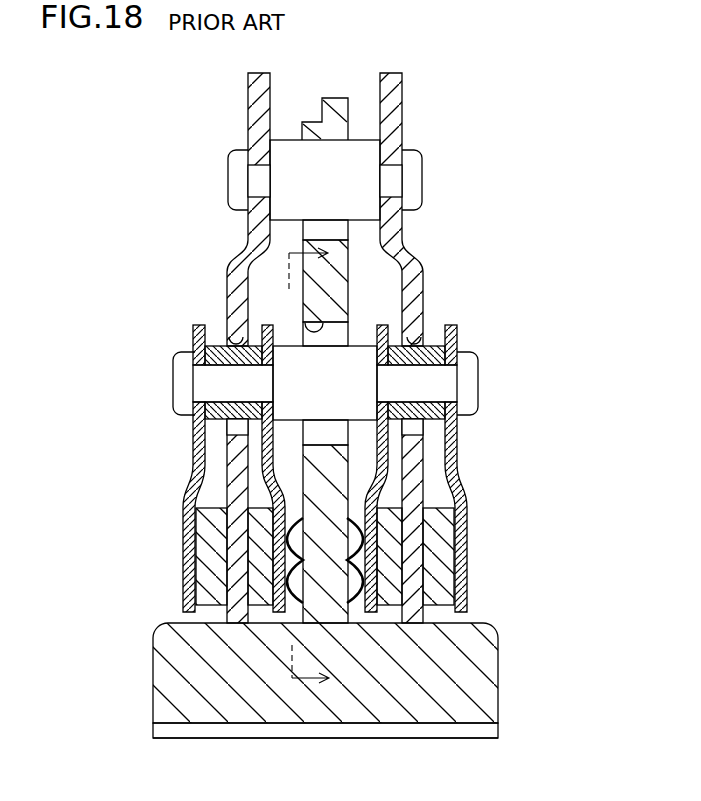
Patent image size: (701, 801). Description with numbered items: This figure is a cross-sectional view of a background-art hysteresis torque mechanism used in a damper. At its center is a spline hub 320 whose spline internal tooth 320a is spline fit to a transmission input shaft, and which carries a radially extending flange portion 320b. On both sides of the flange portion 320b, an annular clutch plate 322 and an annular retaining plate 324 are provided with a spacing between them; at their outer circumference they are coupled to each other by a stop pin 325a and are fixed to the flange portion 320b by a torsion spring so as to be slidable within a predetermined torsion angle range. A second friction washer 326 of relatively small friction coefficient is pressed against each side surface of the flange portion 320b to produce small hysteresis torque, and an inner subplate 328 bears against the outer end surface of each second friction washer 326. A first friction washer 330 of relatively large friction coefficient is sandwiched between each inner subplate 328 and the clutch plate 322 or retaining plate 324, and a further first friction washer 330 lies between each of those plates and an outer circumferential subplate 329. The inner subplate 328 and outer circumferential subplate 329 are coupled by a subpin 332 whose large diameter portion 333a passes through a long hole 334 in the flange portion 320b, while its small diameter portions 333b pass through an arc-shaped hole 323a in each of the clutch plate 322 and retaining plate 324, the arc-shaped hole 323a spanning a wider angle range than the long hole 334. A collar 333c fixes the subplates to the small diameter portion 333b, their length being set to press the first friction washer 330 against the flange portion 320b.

The spline hub 320 is at (477, 679).
The spline internal tooth 320a is at (473, 738).
The flange portion 320b is at (327, 292).
The clutch plate 322 is at (248, 97).
The retaining plate 324 is at (402, 104).
The stop pin 325a is at (352, 165).
The second friction washer 326 is at (283, 558).
The inner subplate 328 is at (283, 500).
The outer circumferential subplate 329 is at (200, 453).
The first friction washer 330 is at (212, 583).
The subpin 332 is at (491, 369).
The large diameter portion 333a is at (348, 358).
The small diameter portion 333b is at (212, 385).
The collar 333c is at (196, 352).
The long hole 334 is at (303, 333).
The arc-shaped hole 323a is at (228, 337).